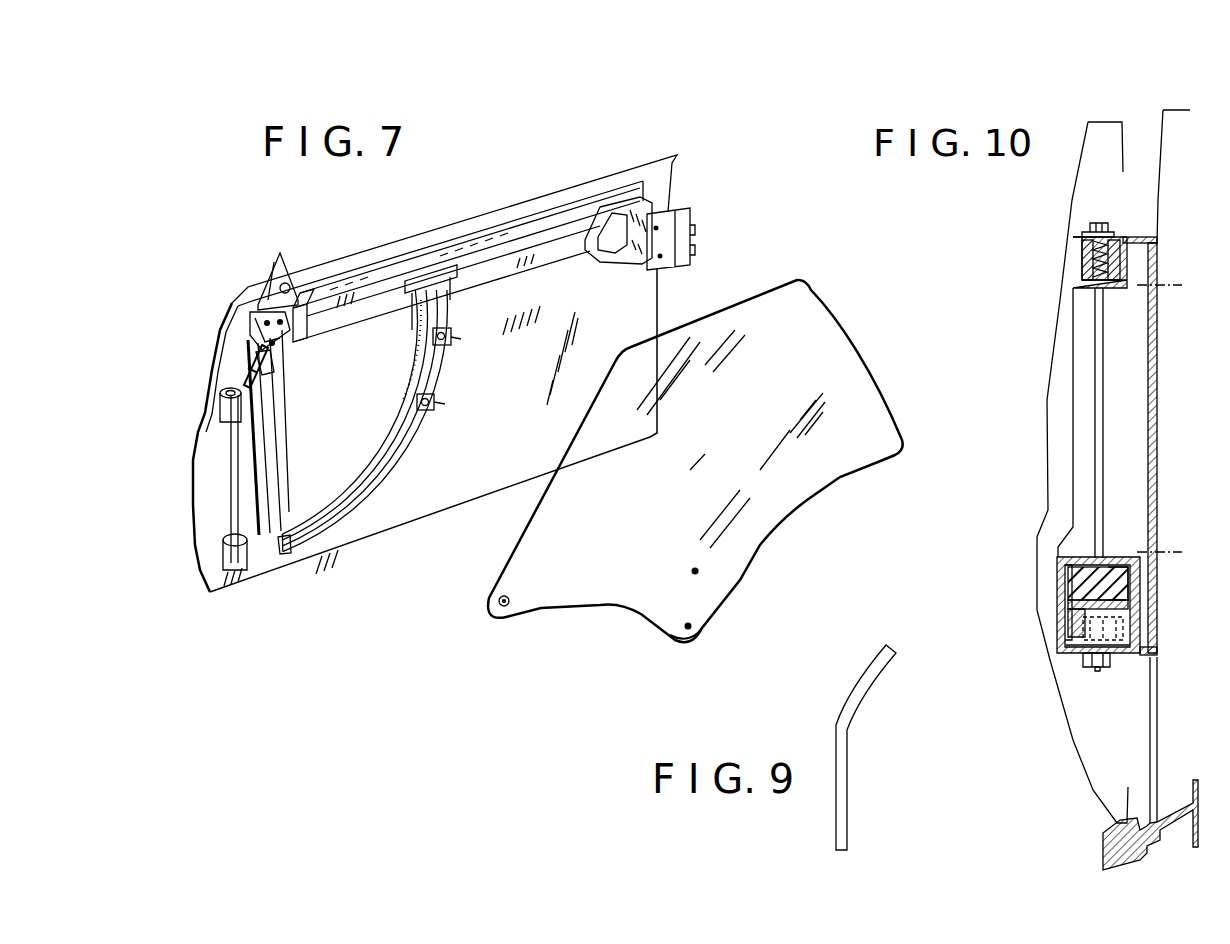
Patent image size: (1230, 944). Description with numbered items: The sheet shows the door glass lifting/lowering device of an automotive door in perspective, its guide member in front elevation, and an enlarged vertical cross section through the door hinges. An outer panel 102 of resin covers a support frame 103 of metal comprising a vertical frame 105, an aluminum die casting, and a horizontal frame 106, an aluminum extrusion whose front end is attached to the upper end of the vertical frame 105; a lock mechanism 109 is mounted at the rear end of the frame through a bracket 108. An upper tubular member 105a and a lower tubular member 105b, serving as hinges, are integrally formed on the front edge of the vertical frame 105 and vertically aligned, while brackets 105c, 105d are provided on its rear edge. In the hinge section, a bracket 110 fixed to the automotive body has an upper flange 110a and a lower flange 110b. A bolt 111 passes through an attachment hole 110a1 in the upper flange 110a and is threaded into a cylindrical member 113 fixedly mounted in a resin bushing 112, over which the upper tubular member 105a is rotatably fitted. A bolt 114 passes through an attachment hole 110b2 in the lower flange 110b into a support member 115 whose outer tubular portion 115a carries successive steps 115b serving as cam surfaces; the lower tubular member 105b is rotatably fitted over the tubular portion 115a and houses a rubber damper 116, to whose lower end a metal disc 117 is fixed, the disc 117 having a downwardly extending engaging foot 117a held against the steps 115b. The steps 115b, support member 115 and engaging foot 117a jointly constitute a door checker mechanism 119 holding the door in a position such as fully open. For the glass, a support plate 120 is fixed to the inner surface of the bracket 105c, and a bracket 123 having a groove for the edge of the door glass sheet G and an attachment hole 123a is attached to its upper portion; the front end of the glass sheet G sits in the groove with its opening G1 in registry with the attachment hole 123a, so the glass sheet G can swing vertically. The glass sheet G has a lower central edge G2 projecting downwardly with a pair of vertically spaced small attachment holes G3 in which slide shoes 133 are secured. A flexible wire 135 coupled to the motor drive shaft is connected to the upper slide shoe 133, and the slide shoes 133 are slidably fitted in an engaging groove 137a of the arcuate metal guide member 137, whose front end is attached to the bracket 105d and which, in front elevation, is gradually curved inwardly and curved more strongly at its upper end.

In FIG. 7, the outer panel 102 is at (217, 322).
In FIG. 7, the support frame 103 is at (242, 382).
In FIG. 7, the vertical frame 105 is at (230, 456).
In FIG. 10, the vertical frame 105 is at (1095, 376).
In FIG. 7, the upper tubular member 105a is at (220, 406).
In FIG. 10, the upper tubular member 105a is at (1073, 282).
In FIG. 7, the lower tubular member 105b is at (223, 558).
In FIG. 10, the lower tubular member 105b is at (1057, 585).
In FIG. 7, the bracket 105c is at (275, 363).
In FIG. 7, the bracket 105d is at (280, 535).
In FIG. 7, the horizontal frame 106 is at (485, 245).
In FIG. 7, the bracket 108 is at (612, 213).
In FIG. 7, the lock mechanism 109 is at (685, 216).
In FIG. 10, the bracket 110 is at (1158, 387).
In FIG. 10, the upper flange 110a is at (1140, 237).
In FIG. 10, the attachment hole 110a1 is at (1090, 230).
In FIG. 10, the lower flange 110b is at (1112, 667).
In FIG. 10, the attachment hole 110b2 is at (1088, 667).
In FIG. 10, the bolt 111 is at (1088, 252).
In FIG. 10, the bushing 112 is at (1122, 262).
In FIG. 10, the cylindrical member 113 is at (1113, 290).
In FIG. 10, the bolt 114 is at (1057, 653).
In FIG. 10, the support member 115 is at (1127, 628).
In FIG. 10, the outer tubular portion 115a is at (1078, 630).
In FIG. 10, the steps 115b is at (1066, 563).
In FIG. 10, the rubber damper 116 is at (1116, 558).
In FIG. 10, the disc 117 is at (1130, 601).
In FIG. 10, the engaging foot 117a is at (1068, 610).
In FIG. 10, the door checker mechanism 119 is at (1152, 657).
In FIG. 7, the support plate 120 is at (280, 328).
In FIG. 7, the bracket 123 is at (270, 280).
In FIG. 7, the attachment hole 123a is at (293, 278).
In FIG. 7, the slide shoes 133 is at (451, 335).
In FIG. 7, the flexible wire 135 is at (414, 357).
In FIG. 7, the guide member 137 is at (392, 463).
In FIG. 9, the guide member 137 is at (846, 745).
In FIG. 7, the engaging groove 137a is at (365, 500).
In FIG. 7, the door glass sheet G is at (757, 285).
In FIG. 7, the opening G1 is at (506, 610).
In FIG. 7, the lower central edge G2 is at (690, 642).
In FIG. 7, the small attachment holes G3 is at (692, 627).